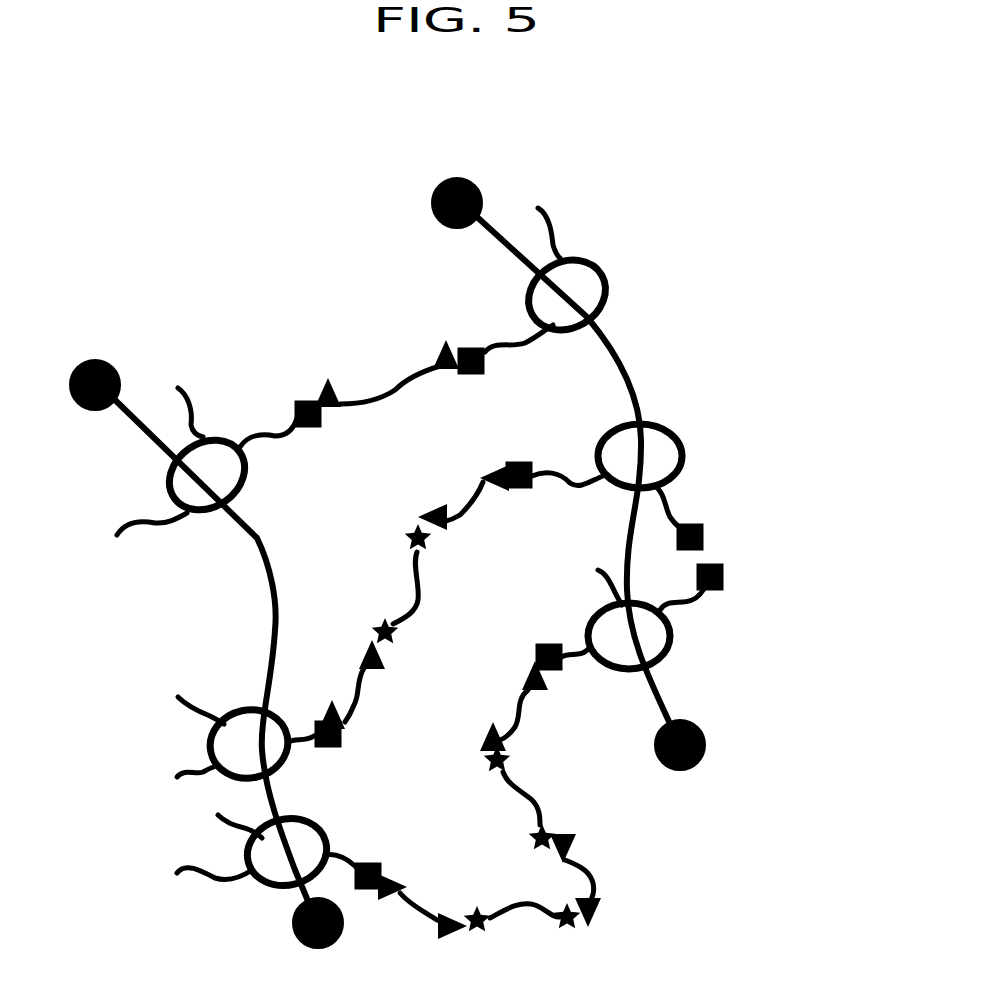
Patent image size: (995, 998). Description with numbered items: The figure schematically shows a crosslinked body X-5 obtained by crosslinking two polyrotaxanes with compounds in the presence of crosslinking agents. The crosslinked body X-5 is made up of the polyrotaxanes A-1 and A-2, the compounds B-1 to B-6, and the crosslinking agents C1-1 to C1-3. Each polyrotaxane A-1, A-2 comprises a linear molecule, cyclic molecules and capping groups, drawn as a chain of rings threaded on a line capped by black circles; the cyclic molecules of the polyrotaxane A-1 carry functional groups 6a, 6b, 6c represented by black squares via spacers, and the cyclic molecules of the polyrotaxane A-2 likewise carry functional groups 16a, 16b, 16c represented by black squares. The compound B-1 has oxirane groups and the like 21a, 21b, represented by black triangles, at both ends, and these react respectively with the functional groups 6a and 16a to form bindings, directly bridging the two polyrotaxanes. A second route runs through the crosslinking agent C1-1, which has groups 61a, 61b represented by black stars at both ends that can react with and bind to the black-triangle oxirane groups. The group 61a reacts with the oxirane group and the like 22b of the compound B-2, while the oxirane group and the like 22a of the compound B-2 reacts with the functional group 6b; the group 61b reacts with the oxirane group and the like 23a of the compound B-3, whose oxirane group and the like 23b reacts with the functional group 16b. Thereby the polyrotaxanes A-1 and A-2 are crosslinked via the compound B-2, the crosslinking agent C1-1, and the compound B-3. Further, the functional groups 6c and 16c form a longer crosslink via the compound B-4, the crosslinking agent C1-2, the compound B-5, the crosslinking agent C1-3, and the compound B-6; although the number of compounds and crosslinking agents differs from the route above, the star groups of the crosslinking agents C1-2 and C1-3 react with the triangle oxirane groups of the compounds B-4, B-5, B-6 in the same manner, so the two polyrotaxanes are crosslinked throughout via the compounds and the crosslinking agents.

The crosslinked body X-5 is at (714, 363).
The polyrotaxane A-1 is at (273, 318).
The polyrotaxane A-2 is at (680, 175).
The functional group 6a is at (298, 410).
The functional group 6b is at (326, 750).
The functional group 6c is at (369, 860).
The functional group 16a is at (468, 347).
The functional group 16b is at (522, 462).
The functional group 16c is at (547, 644).
The oxirane group and the like 21a is at (335, 408).
The oxirane group and the like 21b is at (441, 368).
The oxirane group and the like 22a is at (350, 728).
The oxirane group and the like 22b is at (372, 648).
The oxirane group and the like 23a is at (428, 510).
The oxirane group and the like 23b is at (492, 468).
The group 61a is at (378, 620).
The group 61b is at (405, 538).
The compound B-1 is at (445, 333).
The compound B-2 is at (392, 663).
The compound B-3 is at (510, 493).
The compound B-4 is at (438, 937).
The compound B-5 is at (582, 827).
The compound B-6 is at (556, 674).
The crosslinking agent C1-1 is at (440, 550).
The crosslinking agent C1-2 is at (572, 935).
The crosslinking agent C1-3 is at (520, 752).